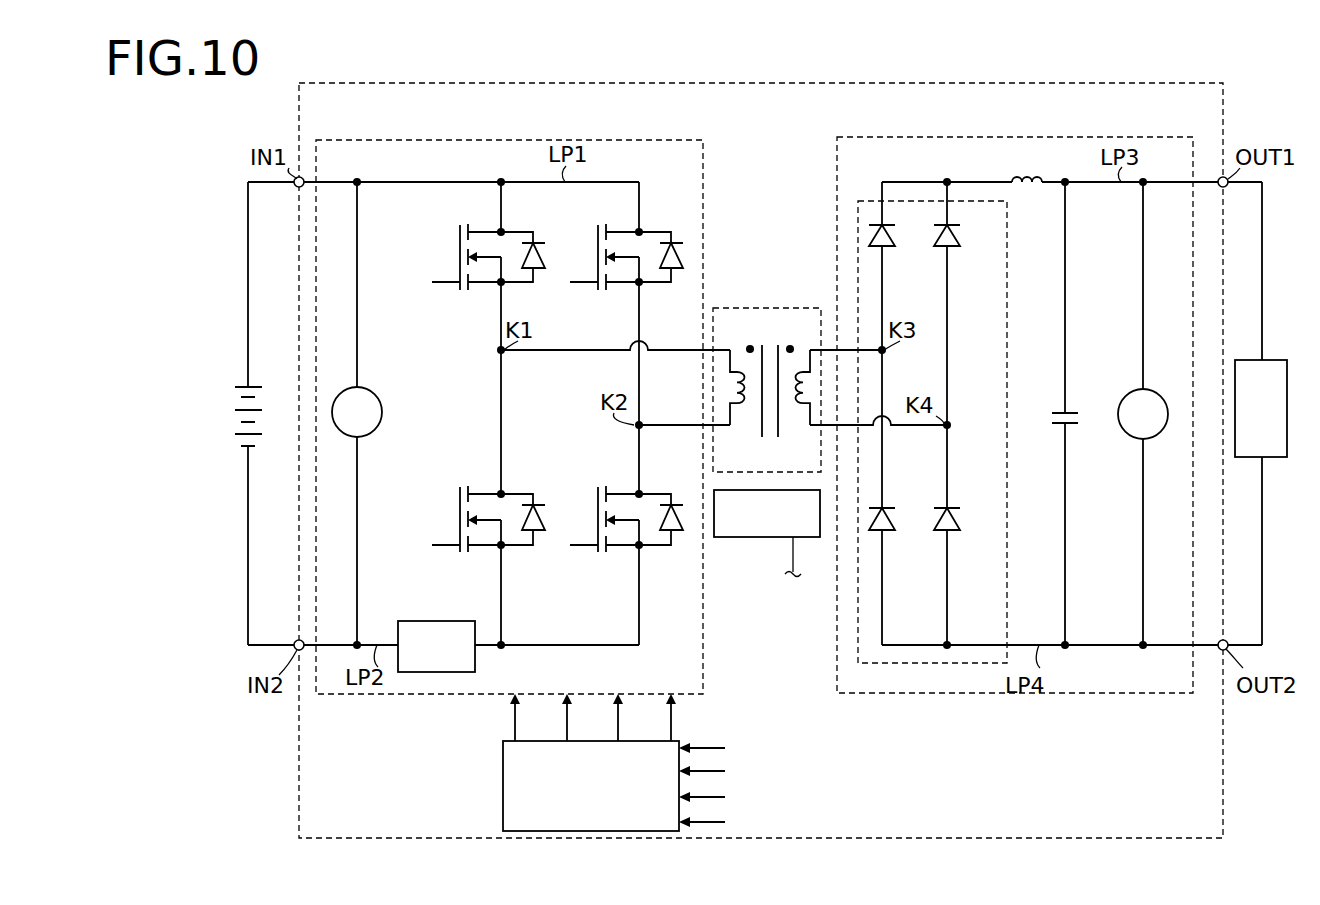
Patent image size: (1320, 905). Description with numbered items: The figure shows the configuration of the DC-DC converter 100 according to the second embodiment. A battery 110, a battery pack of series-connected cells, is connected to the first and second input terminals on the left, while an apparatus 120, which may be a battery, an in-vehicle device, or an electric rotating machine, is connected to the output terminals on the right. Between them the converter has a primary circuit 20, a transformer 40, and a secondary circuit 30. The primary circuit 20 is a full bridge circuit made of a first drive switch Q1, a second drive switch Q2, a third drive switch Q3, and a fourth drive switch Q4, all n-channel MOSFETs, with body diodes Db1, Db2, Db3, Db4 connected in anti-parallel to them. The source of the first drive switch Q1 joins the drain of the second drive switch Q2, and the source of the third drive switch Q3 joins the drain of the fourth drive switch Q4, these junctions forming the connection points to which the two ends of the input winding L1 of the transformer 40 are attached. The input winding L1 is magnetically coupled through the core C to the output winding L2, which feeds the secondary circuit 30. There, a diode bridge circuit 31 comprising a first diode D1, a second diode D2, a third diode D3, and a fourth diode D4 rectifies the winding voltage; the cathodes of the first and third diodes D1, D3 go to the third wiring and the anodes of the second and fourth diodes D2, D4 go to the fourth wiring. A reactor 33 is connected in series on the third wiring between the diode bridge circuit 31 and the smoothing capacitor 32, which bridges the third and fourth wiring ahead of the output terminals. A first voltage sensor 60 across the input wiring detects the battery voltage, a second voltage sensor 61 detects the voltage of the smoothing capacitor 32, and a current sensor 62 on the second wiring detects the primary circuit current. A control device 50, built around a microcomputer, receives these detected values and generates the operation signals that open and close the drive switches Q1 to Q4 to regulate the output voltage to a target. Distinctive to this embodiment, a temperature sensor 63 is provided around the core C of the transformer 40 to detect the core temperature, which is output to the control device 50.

The DC-DC converter 100 is at (1174, 83).
The primary circuit 20 is at (468, 140).
The secondary circuit 30 is at (893, 137).
The diode bridge circuit 31 is at (931, 405).
The smoothing capacitor 32 is at (1068, 413).
The reactor 33 is at (1042, 181).
The transformer 40 is at (756, 308).
The control device 50 is at (503, 770).
The first voltage sensor 60 is at (382, 397).
The second voltage sensor 61 is at (1156, 390).
The current sensor 62 is at (413, 621).
The temperature sensor 63 is at (745, 537).
The battery 110 is at (250, 386).
The apparatus 120 is at (1270, 360).
The first drive switch Q1 is at (485, 231).
The second drive switch Q2 is at (485, 494).
The third drive switch Q3 is at (623, 231).
The fourth drive switch Q4 is at (621, 494).
The body diode Db1 is at (540, 243).
The body diode Db2 is at (540, 505).
The body diode Db3 is at (678, 243).
The body diode Db4 is at (678, 505).
The first diode D1 is at (889, 234).
The second diode D2 is at (890, 508).
The third diode D3 is at (954, 234).
The fourth diode D4 is at (956, 508).
The input winding L1 is at (734, 368).
The output winding L2 is at (799, 368).
The core C is at (772, 345).